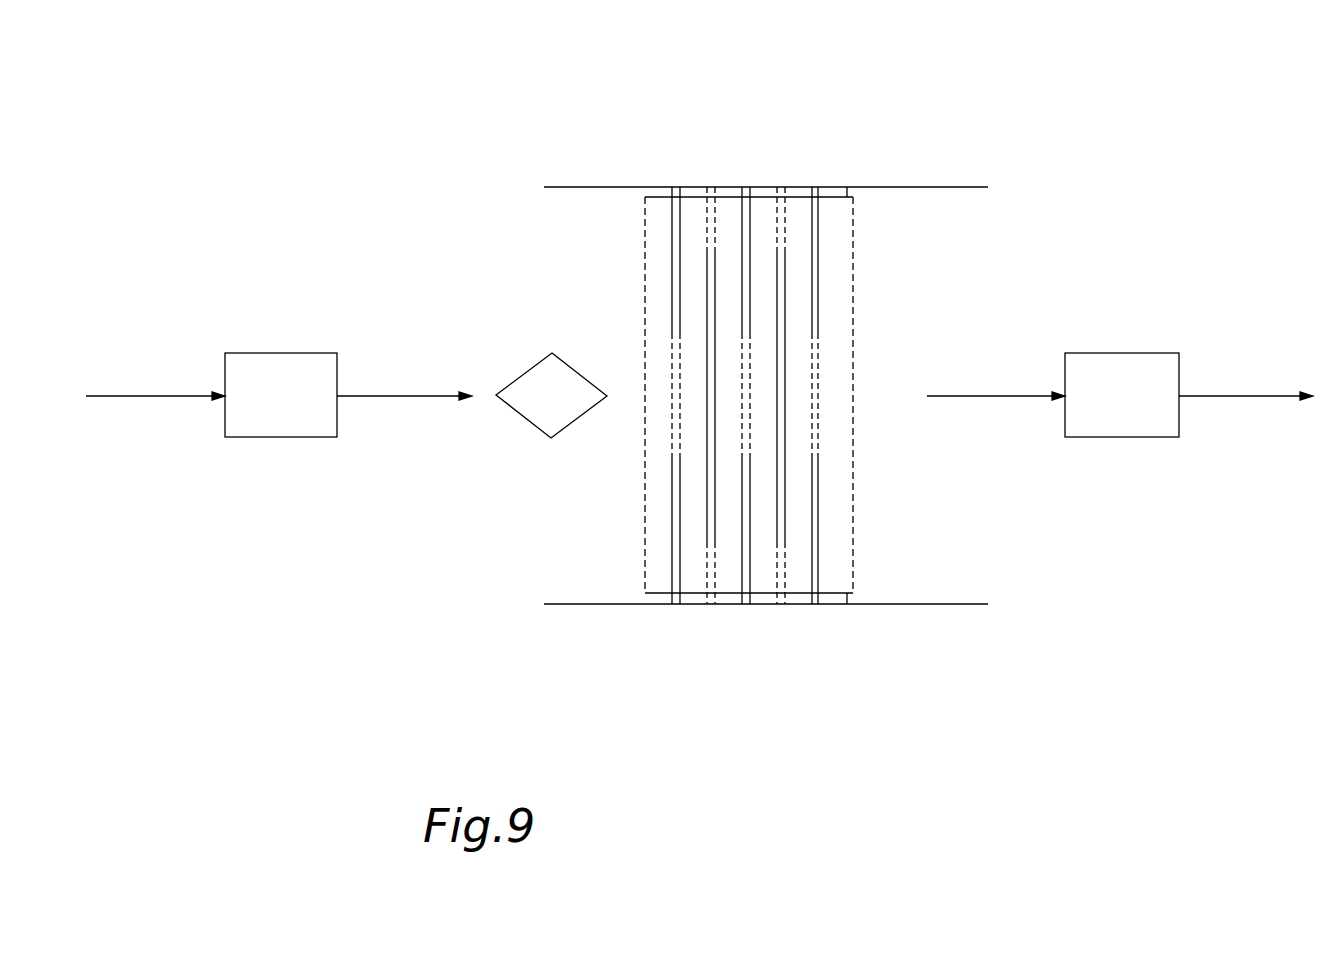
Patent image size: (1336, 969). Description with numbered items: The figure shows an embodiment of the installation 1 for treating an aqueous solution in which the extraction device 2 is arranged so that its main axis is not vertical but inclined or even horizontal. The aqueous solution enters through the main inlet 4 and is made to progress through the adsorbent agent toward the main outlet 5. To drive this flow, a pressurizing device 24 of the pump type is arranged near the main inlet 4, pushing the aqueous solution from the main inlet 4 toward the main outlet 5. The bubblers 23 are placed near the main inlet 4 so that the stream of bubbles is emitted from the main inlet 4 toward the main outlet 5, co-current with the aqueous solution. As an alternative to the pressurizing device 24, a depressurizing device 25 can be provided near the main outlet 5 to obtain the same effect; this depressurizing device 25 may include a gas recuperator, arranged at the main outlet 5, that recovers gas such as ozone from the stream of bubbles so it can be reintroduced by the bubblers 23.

The installation 1 is at (766, 321).
The extraction device 2 is at (726, 572).
The main inlet 4 is at (645, 246).
The main outlet 5 is at (853, 246).
The bubblers 23 is at (538, 405).
The pressurizing device 24 is at (284, 375).
The depressurizing device 25 is at (1142, 375).